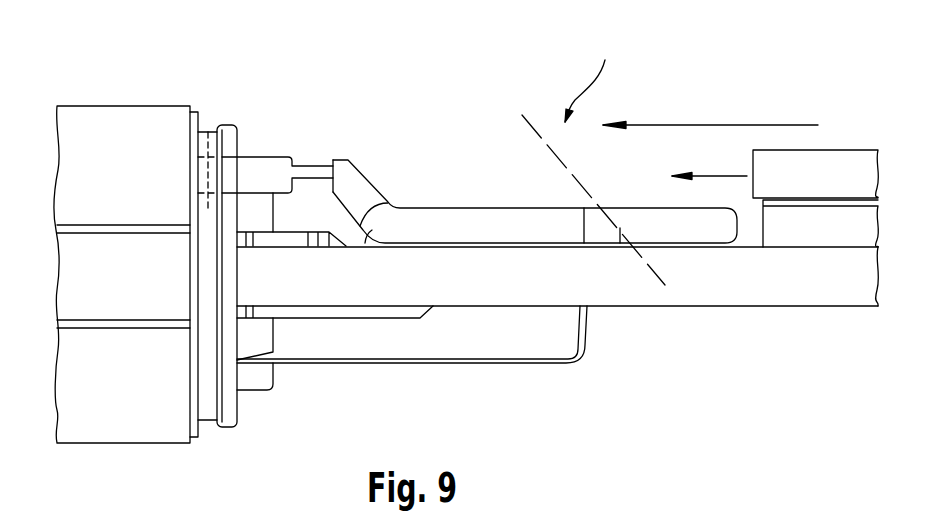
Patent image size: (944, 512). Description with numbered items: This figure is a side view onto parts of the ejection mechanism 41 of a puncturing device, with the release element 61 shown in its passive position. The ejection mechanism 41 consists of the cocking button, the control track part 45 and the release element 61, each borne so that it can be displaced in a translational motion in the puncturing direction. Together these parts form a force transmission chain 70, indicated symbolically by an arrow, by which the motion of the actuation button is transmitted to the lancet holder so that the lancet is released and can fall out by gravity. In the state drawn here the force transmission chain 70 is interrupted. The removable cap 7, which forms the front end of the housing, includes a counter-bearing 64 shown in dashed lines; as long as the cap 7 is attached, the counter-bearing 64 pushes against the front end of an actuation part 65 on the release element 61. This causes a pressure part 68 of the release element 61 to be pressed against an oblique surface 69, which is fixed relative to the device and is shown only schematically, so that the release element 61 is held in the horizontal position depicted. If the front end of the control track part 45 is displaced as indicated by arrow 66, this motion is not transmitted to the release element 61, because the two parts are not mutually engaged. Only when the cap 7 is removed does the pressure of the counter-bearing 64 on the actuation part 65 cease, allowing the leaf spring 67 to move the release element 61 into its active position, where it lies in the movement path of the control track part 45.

The removable cap 7 is at (144, 177).
The ejection mechanism 41 is at (592, 75).
The control track part 45 is at (840, 168).
The release element 61 is at (427, 223).
The counter-bearing 64 is at (193, 153).
The actuation part 65 is at (268, 167).
The arrow indicating displacement of control track part 66 is at (723, 173).
The leaf spring 67 is at (559, 365).
The pressure part 68 is at (603, 222).
The oblique surface 69 is at (553, 158).
The force transmission chain 70 is at (736, 123).